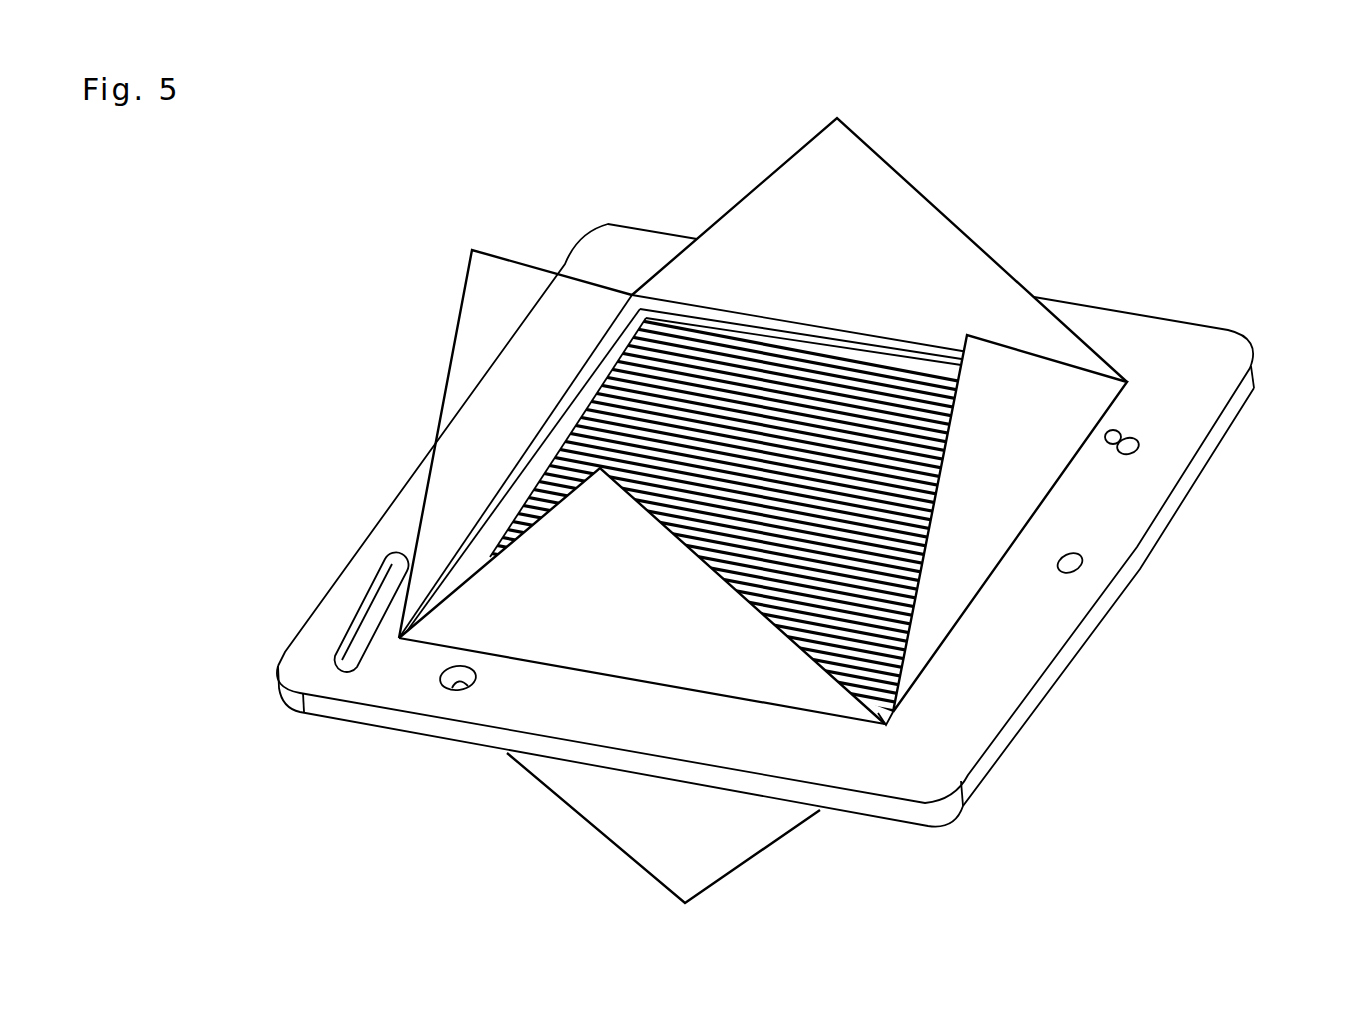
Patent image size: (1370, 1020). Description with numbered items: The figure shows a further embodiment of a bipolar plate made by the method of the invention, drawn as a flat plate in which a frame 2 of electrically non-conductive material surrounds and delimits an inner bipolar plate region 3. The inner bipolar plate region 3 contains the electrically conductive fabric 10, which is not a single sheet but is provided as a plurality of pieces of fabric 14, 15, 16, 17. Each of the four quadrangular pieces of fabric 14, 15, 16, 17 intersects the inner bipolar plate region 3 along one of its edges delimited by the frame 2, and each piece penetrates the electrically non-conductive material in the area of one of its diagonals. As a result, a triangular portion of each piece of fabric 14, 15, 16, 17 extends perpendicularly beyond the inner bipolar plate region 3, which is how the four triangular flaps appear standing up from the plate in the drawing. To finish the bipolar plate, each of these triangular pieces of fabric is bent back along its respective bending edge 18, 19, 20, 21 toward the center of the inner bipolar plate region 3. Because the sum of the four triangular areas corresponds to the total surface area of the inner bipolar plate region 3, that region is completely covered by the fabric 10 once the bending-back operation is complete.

The frame 2 is at (1148, 358).
The inner bipolar plate region 3 is at (770, 360).
The electrically conductive fabric 10 is at (864, 510).
The piece of fabric 14 is at (515, 444).
The piece of fabric 15 is at (879, 250).
The piece of fabric 16 is at (1010, 523).
The piece of fabric 17 is at (642, 685).
The bending edge 18 is at (480, 515).
The bending edge 19 is at (745, 313).
The bending edge 20 is at (1010, 528).
The bending edge 21 is at (617, 673).